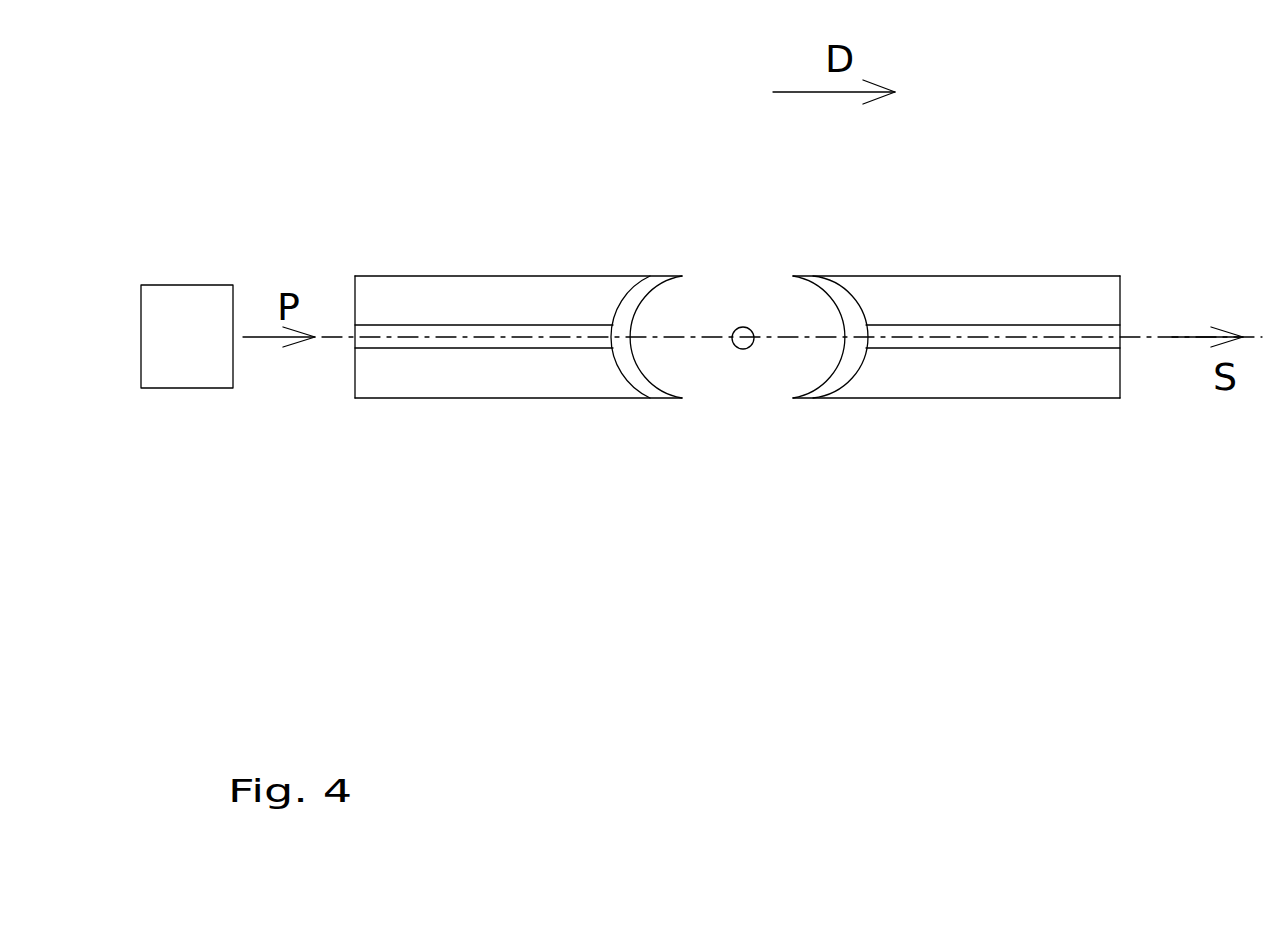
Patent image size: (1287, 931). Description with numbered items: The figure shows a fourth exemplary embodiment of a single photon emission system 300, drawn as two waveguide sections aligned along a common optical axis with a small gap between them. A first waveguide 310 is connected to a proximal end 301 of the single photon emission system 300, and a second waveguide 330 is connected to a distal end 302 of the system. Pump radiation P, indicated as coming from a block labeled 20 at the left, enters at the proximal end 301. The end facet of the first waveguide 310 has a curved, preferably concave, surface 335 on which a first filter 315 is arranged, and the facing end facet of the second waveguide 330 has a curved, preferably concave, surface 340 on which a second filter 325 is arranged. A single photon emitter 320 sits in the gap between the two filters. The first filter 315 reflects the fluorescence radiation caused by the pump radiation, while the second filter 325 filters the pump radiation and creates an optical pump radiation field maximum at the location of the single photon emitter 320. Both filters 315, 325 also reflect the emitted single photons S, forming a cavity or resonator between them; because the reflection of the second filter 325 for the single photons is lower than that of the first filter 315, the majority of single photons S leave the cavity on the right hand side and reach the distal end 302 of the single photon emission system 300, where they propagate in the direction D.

The light source 20 is at (187, 336).
The single photon emission system 300 is at (755, 439).
The proximal end 301 is at (353, 332).
The distal end 302 is at (1172, 305).
The first waveguide 310 is at (467, 378).
The first filter 315 is at (642, 387).
The single photon emitter 320 is at (744, 345).
The second filter 325 is at (845, 307).
The second waveguide 330 is at (905, 380).
The curved surface 335 is at (622, 298).
The curved surface 340 is at (800, 279).